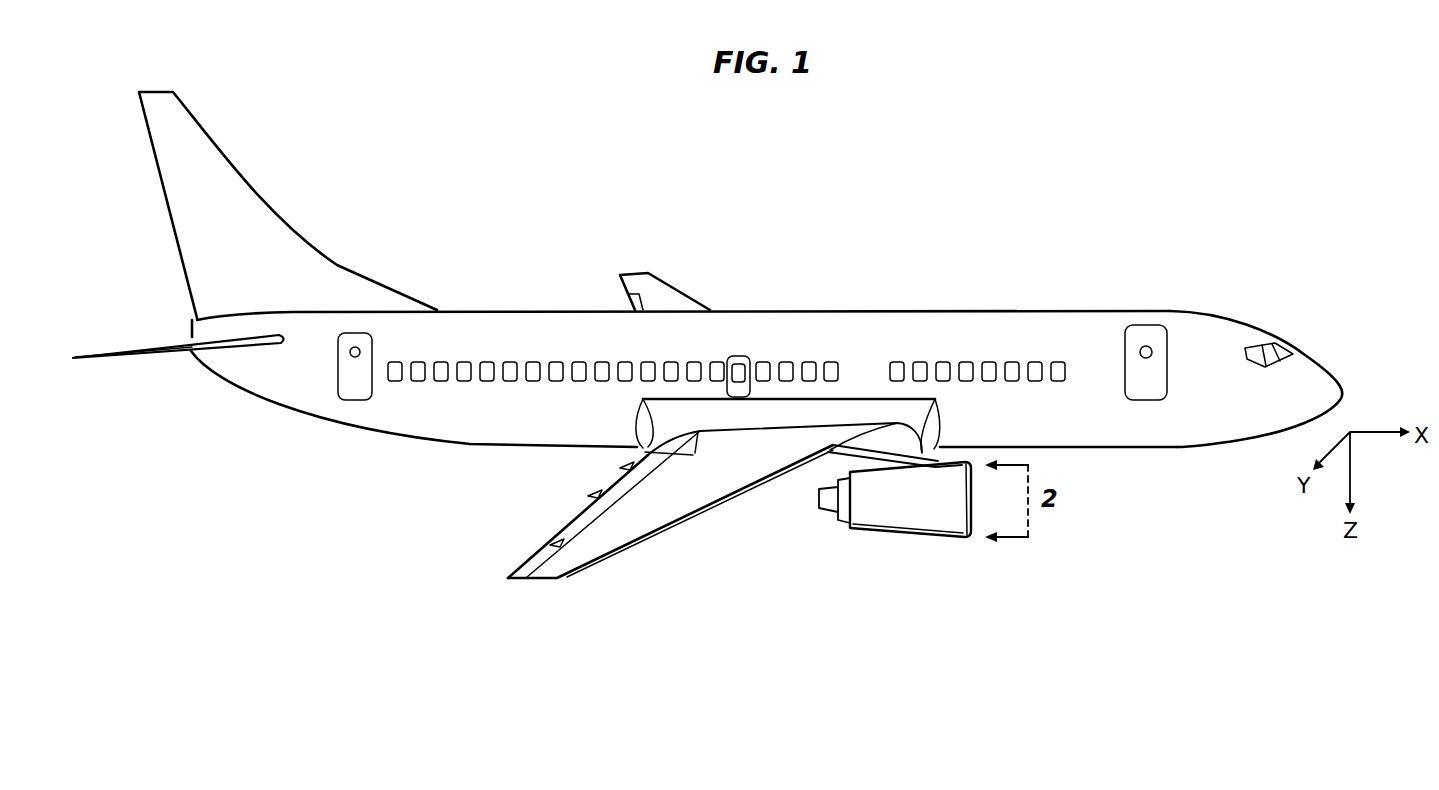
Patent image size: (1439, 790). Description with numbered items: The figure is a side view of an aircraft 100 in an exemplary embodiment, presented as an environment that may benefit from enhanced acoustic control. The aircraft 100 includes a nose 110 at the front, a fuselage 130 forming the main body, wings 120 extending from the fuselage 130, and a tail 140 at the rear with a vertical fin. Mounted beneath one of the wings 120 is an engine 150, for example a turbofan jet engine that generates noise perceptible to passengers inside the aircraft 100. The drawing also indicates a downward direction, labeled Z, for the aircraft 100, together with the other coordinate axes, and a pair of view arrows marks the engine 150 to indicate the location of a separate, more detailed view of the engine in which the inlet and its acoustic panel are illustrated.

The aircraft 100 is at (1108, 650).
The nose 110 is at (1313, 370).
The wings 120 is at (603, 538).
The fuselage 130 is at (877, 323).
The tail 140 is at (197, 180).
The engine 150 is at (942, 515).